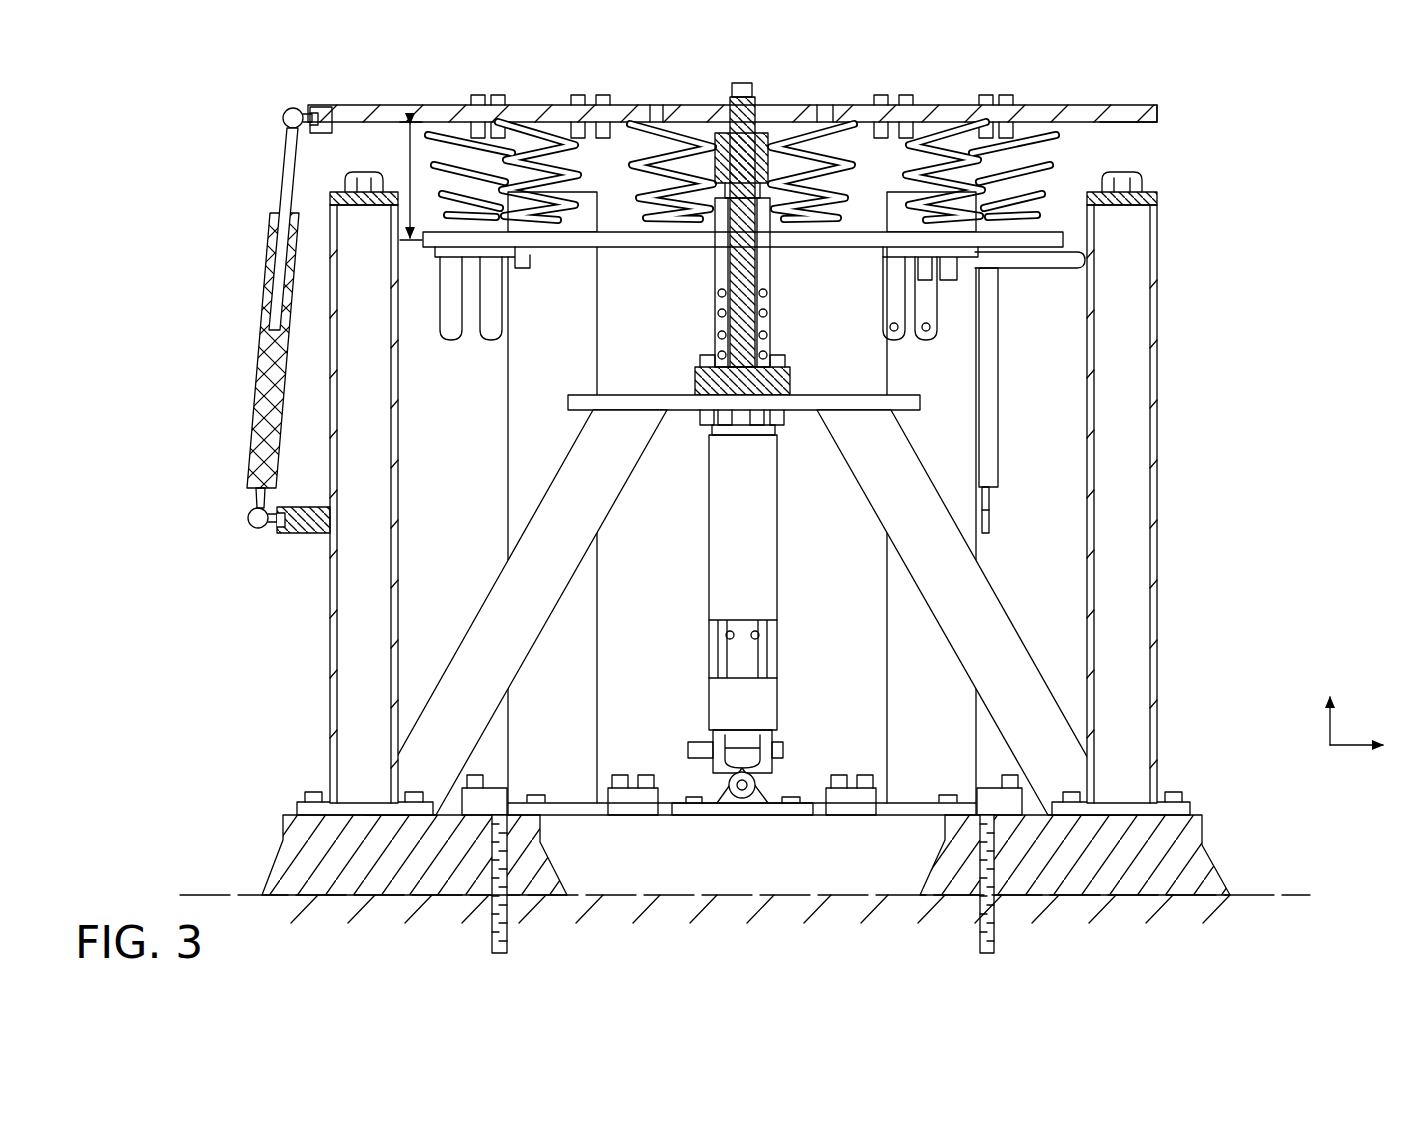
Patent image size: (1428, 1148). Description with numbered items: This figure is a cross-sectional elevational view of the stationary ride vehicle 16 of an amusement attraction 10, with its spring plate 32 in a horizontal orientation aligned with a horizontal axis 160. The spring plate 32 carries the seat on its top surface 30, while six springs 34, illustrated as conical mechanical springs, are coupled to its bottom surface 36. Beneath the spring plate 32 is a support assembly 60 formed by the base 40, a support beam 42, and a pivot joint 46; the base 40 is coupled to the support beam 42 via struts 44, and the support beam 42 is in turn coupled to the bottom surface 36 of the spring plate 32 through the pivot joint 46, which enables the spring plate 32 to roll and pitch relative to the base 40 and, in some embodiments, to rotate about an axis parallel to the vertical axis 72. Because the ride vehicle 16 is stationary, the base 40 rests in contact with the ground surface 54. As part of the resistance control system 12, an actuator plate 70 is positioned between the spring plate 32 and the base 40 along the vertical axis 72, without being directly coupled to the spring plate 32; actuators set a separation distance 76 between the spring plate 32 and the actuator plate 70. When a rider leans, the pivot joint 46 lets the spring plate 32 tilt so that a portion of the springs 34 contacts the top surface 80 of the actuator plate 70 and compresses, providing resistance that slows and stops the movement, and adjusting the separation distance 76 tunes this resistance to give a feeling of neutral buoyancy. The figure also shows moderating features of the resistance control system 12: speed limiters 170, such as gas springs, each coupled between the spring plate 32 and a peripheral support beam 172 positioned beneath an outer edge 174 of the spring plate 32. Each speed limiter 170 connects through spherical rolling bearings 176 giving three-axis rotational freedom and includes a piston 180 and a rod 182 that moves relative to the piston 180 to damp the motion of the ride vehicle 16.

The amusement attraction 10 is at (1298, 75).
The resistance control system 12 is at (1283, 118).
The ride vehicle 16 is at (1190, 100).
The top surface 30 is at (1112, 105).
The spring plate 32 is at (1162, 112).
The springs 34 is at (453, 125).
The bottom surface 36 is at (1130, 124).
The base 40 is at (1213, 850).
The support beam 42 is at (780, 563).
The struts 44 is at (630, 477).
The pivot joint 46 is at (717, 213).
The ground surface 54 is at (1245, 895).
The support assembly 60 is at (797, 518).
The actuator plate 70 is at (1068, 240).
The vertical axis 72 is at (1310, 712).
The separation distance 76 is at (410, 181).
The top surface 80 is at (1057, 233).
The horizontal axis 160 is at (1379, 728).
The speed limiters 170 is at (262, 315).
The peripheral support beam 172 is at (398, 508).
The outer edge 174 is at (372, 128).
The spherical rolling bearings 176 is at (283, 115).
The piston 180 is at (270, 280).
The rod 182 is at (290, 172).